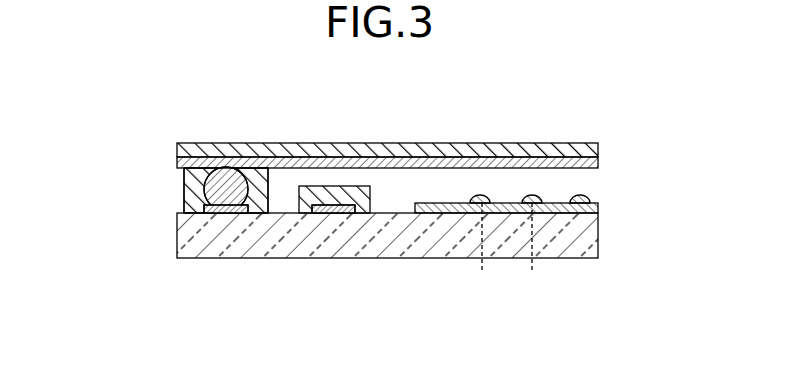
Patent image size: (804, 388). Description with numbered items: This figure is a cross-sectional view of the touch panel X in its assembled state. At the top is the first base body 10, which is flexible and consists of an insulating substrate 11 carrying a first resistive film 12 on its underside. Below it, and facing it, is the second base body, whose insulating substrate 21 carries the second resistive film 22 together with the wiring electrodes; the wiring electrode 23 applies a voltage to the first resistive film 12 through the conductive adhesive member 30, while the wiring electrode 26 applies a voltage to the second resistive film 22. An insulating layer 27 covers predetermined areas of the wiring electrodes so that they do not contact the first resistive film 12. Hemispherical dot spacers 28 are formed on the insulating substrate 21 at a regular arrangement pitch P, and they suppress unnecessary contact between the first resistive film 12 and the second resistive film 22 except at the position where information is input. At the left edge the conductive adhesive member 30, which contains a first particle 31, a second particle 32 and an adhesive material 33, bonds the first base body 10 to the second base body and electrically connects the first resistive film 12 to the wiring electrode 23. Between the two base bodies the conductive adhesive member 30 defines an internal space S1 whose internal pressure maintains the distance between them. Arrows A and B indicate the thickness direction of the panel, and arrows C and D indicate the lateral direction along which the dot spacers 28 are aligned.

The first base body 10 is at (344, 154).
The insulating substrate 11 is at (177, 149).
The first resistive film 12 is at (177, 160).
The insulating substrate 21 is at (587, 249).
The second resistive film 22 is at (598, 208).
The wiring electrode 23 is at (224, 214).
The wiring electrode 26 is at (338, 214).
The insulating layer 27 is at (332, 187).
The dot spacer 28 is at (493, 198).
The conductive adhesive member 30 is at (227, 144).
The first particle 31 is at (205, 170).
The second particle 32 is at (226, 189).
The adhesive material 33 is at (177, 104).
The internal space S1 is at (402, 192).
The touch panel X is at (510, 123).
The arrangement pitch P is at (530, 268).
The arrow A is at (670, 233).
The arrow B is at (670, 163).
The arrow C is at (460, 330).
The arrow D is at (358, 330).